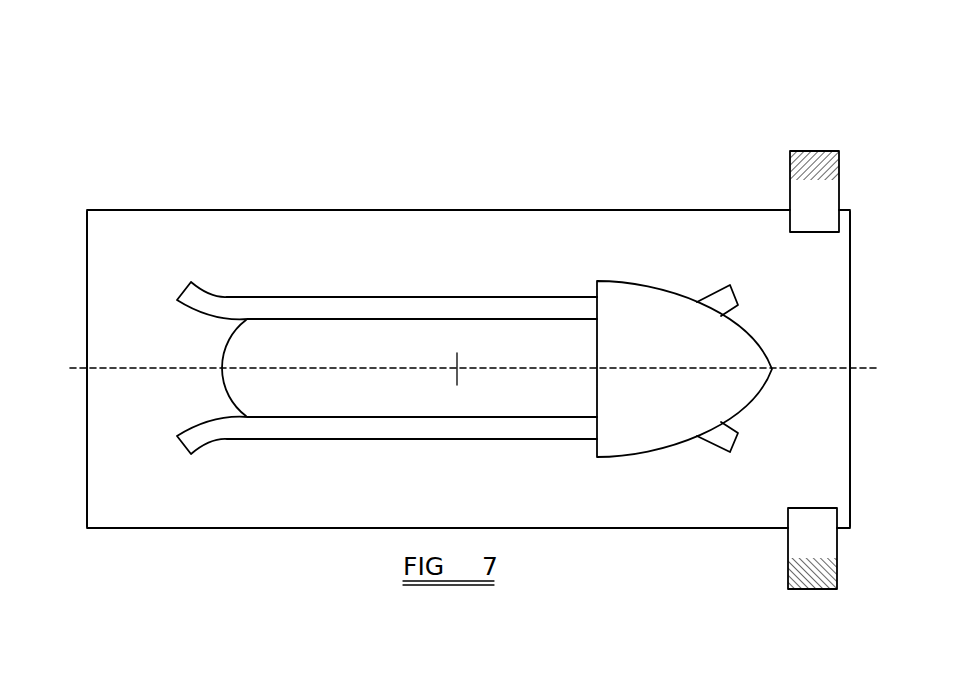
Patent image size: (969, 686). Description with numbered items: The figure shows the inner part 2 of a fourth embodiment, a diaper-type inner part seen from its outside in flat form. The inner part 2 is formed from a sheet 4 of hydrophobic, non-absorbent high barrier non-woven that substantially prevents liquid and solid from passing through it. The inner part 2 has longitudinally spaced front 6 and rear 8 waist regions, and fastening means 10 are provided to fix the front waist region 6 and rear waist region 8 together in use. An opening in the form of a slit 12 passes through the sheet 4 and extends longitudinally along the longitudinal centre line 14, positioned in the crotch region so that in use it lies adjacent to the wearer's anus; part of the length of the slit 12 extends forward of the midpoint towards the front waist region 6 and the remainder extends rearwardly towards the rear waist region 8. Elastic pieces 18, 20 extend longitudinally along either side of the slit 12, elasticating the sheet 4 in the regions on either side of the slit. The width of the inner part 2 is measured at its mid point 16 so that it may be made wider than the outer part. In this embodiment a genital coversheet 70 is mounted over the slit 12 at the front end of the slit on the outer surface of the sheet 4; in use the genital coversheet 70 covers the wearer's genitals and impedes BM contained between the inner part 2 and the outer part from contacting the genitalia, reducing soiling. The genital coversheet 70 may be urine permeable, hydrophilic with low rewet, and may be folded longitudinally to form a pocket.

The inner part 2 is at (238, 158).
The sheet 4 is at (465, 242).
The front waist region 6 is at (103, 315).
The rear waist region 8 is at (818, 300).
The fastening means 10 is at (815, 158).
The slit 12 is at (510, 333).
The longitudinal centre line 14 is at (790, 369).
The mid point 16 is at (458, 378).
The elastic piece 18 is at (378, 302).
The elastic piece 20 is at (303, 422).
The genital coversheet 70 is at (648, 438).